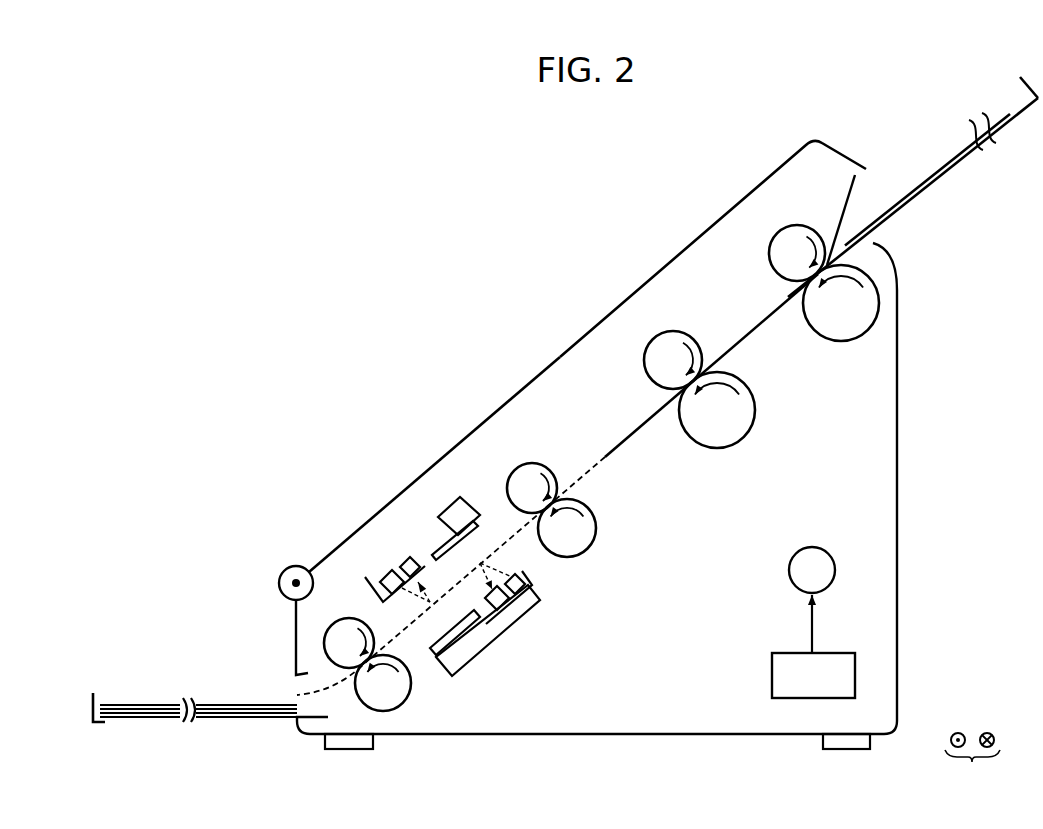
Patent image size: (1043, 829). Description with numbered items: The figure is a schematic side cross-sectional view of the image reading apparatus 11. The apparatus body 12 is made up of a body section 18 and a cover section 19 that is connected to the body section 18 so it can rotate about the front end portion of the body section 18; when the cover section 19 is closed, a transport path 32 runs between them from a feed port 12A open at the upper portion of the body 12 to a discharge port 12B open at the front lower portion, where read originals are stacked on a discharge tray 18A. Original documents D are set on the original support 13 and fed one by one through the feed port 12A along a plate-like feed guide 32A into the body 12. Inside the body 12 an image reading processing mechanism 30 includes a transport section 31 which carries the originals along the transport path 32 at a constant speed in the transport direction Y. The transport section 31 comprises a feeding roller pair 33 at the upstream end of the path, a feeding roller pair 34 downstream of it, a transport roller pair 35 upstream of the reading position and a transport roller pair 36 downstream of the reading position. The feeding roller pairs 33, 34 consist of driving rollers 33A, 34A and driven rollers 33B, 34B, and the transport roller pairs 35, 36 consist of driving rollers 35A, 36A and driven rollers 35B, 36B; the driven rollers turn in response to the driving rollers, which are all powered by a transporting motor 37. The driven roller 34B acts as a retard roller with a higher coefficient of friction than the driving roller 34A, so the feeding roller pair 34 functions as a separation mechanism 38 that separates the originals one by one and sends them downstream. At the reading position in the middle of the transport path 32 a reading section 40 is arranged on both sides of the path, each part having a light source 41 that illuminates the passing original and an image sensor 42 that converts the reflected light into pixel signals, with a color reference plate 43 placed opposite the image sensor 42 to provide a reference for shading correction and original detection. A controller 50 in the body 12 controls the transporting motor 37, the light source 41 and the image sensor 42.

The image reading apparatus 11 is at (390, 275).
The apparatus body 12 is at (898, 516).
The feed port 12A is at (870, 187).
The discharge port 12B is at (295, 676).
The original support 13 is at (963, 167).
The body section 18 is at (898, 590).
The discharge tray 18A is at (208, 720).
The cover section 19 is at (586, 335).
The image reading processing mechanism 30 is at (553, 672).
The transport section 31 is at (788, 417).
The transport path 32 is at (599, 452).
The feed guide 32A is at (847, 198).
The feeding roller pair 33 is at (881, 285).
The driving roller 33A is at (842, 341).
The driven roller 33B is at (770, 237).
The feeding roller pair 34 is at (745, 437).
The driving roller 34A is at (690, 438).
The driven roller 34B is at (645, 356).
The transport roller pair 35 is at (594, 513).
The driving roller 35A is at (594, 541).
The driven roller 35B is at (533, 463).
The transport roller pair 36 is at (408, 697).
The driving roller 36A is at (384, 711).
The driven roller 36B is at (327, 632).
The transporting motor 37 is at (815, 545).
The separation mechanism 38 is at (654, 333).
The reading section 40 is at (388, 563).
The light source 41 is at (373, 564).
The image sensor 42 is at (389, 565).
The color reference plate 43 is at (441, 514).
The controller 50 is at (856, 673).